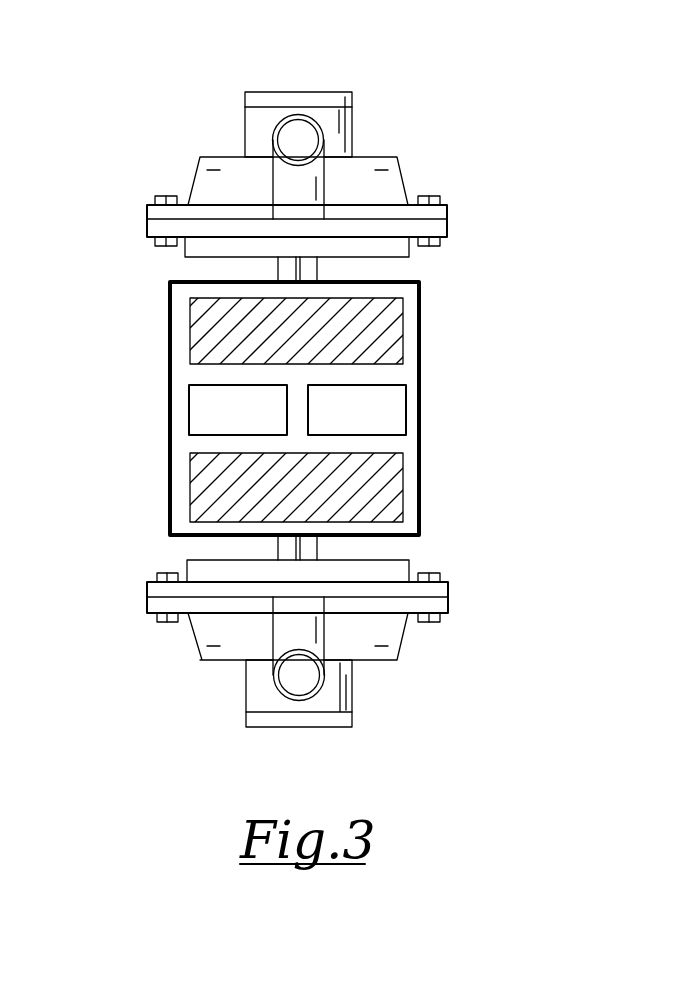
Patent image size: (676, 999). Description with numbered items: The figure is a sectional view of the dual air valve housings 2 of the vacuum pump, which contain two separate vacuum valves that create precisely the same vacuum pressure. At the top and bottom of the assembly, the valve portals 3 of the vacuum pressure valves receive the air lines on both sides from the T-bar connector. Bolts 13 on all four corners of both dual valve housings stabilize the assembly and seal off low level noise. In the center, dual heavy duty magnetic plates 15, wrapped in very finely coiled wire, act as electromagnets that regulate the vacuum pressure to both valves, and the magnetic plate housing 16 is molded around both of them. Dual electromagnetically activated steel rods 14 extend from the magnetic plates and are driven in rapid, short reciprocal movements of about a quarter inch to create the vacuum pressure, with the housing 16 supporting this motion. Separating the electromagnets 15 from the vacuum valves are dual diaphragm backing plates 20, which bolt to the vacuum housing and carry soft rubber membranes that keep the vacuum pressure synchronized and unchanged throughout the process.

The dual air valve housings 2 is at (315, 100).
The valve portals 3 is at (298, 118).
The bolts 13 is at (165, 197).
The steel rods 14 is at (297, 272).
The magnetic plates 15 is at (392, 322).
The magnetic plate housing 16 is at (197, 405).
The diaphragm backing plates 20 is at (402, 245).